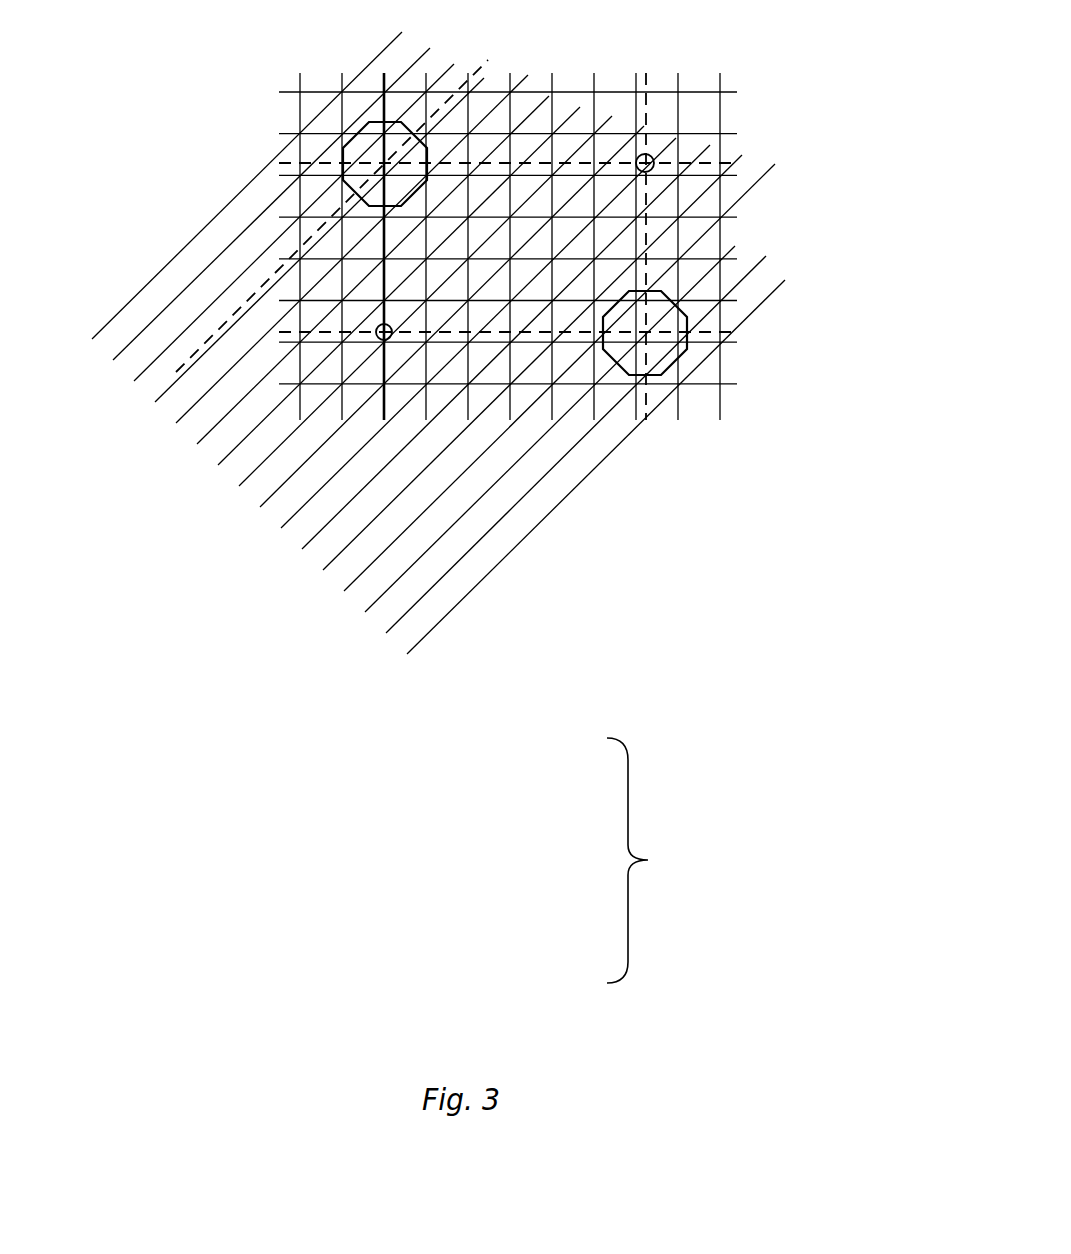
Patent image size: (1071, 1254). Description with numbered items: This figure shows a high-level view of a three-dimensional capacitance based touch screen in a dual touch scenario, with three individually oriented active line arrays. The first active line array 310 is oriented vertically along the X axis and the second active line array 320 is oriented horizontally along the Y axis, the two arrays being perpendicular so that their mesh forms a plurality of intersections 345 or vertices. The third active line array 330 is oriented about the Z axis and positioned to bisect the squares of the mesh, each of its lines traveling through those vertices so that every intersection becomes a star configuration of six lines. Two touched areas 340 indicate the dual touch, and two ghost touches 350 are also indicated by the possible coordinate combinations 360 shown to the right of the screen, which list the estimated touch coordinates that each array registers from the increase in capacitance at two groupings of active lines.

The first active line array 310 is at (718, 470).
The second active line array 320 is at (234, 127).
The third active line array 330 is at (189, 543).
The touched areas 340 is at (618, 292).
The intersections 345 is at (432, 400).
The ghost touches 350 is at (395, 329).
The possible coordinate combinations 360 is at (486, 860).